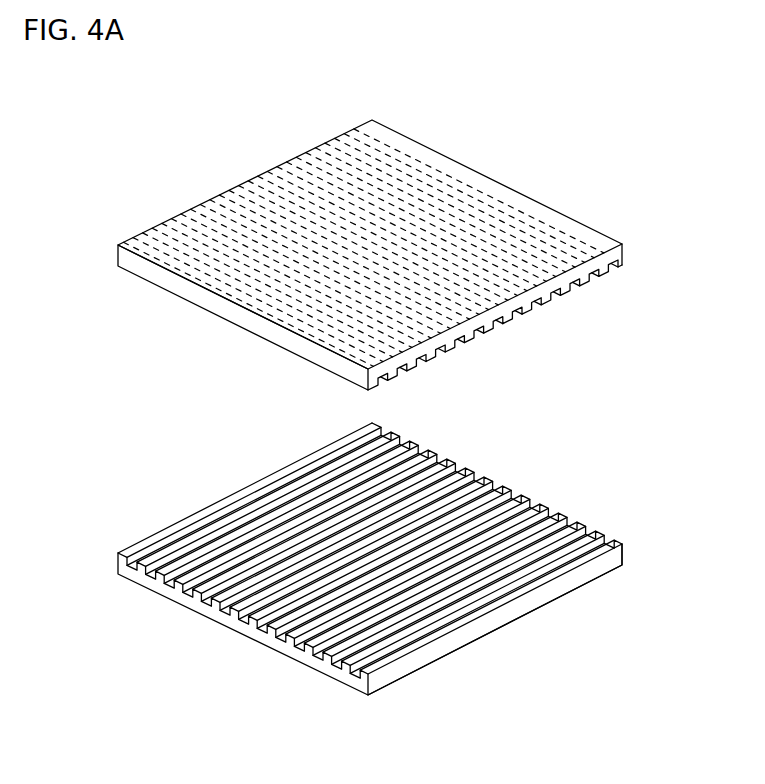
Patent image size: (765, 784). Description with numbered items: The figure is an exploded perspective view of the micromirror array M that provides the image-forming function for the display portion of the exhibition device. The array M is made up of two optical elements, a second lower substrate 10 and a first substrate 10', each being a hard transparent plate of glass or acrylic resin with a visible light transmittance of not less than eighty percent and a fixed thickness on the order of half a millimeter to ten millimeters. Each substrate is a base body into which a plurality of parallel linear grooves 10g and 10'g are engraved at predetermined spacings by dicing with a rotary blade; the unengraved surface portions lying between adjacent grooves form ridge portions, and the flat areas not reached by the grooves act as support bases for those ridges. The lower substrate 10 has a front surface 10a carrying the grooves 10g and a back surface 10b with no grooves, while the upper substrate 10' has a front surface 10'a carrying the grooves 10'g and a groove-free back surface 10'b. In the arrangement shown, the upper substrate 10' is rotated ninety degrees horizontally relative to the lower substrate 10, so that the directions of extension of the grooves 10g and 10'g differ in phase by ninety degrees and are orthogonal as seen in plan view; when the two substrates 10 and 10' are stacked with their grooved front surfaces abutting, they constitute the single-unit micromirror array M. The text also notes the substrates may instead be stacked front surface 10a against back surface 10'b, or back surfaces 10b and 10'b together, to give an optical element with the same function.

The micromirror array M is at (447, 412).
The second lower substrate 10 is at (369, 558).
The front surface 10a is at (210, 506).
The back surface 10b is at (500, 628).
The linear grooves 10g is at (185, 582).
The first substrate 10' is at (370, 247).
The front surface 10'a is at (220, 317).
The back surface 10'b is at (363, 235).
The linear grooves 10'g is at (515, 317).